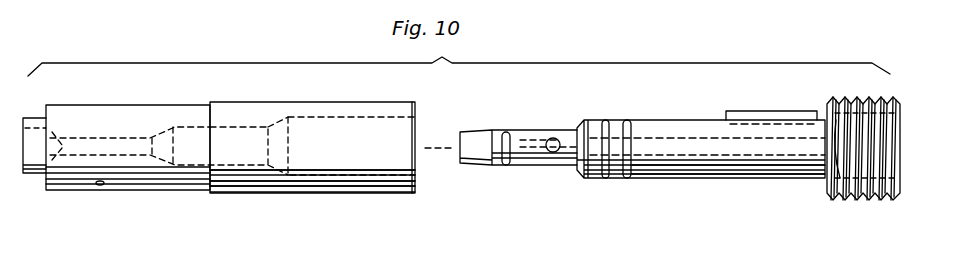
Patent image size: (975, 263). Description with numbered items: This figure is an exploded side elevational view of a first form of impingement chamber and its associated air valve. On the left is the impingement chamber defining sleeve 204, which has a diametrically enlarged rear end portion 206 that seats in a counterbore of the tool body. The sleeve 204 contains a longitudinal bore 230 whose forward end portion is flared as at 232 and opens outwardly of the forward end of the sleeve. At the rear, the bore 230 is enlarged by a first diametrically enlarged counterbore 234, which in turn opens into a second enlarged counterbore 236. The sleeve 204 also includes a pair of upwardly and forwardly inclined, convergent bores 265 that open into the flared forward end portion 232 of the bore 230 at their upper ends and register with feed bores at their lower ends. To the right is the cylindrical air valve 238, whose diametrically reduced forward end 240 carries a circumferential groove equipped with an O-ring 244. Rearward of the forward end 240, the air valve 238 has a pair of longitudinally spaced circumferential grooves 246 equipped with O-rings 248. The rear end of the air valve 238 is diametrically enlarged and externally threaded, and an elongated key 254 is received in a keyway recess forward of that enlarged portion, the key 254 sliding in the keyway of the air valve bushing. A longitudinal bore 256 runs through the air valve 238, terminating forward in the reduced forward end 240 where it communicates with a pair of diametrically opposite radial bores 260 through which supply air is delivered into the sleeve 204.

The impingement chamber defining sleeve 204 is at (265, 186).
The diametrically enlarged rear end portion 206 is at (378, 191).
The longitudinal bore 230 is at (132, 137).
The flared forward end portion 232 is at (66, 137).
The first diametrically enlarged counterbore 234 is at (243, 127).
The second enlarged counterbore 236 is at (363, 123).
The cylindrical air valve 238 is at (658, 130).
The diametrically reduced forward end 240 is at (505, 190).
The O-ring 244 is at (507, 130).
The longitudinally spaced circumferential grooves 246 is at (636, 125).
The O-rings 248 is at (627, 178).
The elongated key 254 is at (749, 116).
The longitudinal bore 256 is at (714, 153).
The radial bores 260 is at (553, 153).
The upwardly and forwardly inclined convergent bores 265 is at (99, 185).